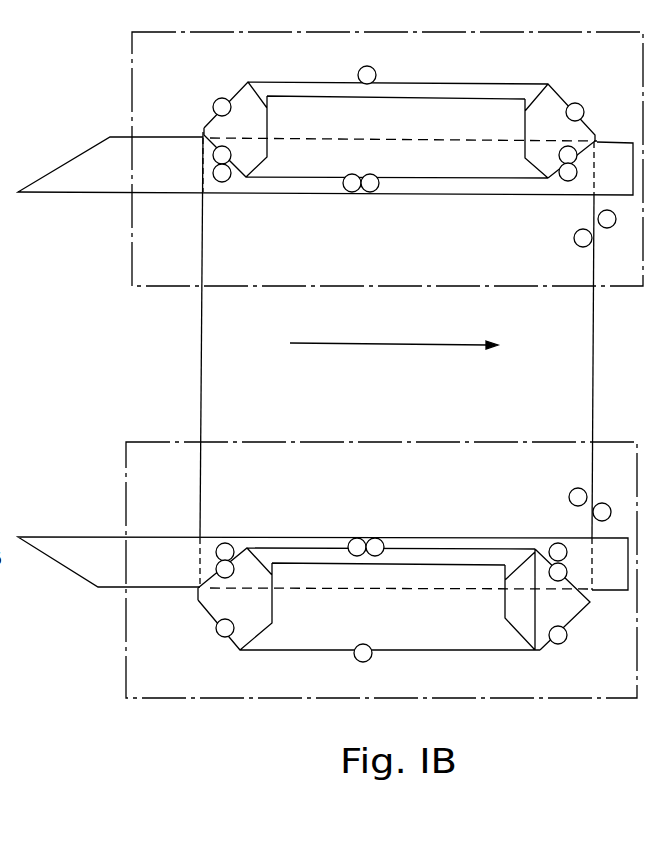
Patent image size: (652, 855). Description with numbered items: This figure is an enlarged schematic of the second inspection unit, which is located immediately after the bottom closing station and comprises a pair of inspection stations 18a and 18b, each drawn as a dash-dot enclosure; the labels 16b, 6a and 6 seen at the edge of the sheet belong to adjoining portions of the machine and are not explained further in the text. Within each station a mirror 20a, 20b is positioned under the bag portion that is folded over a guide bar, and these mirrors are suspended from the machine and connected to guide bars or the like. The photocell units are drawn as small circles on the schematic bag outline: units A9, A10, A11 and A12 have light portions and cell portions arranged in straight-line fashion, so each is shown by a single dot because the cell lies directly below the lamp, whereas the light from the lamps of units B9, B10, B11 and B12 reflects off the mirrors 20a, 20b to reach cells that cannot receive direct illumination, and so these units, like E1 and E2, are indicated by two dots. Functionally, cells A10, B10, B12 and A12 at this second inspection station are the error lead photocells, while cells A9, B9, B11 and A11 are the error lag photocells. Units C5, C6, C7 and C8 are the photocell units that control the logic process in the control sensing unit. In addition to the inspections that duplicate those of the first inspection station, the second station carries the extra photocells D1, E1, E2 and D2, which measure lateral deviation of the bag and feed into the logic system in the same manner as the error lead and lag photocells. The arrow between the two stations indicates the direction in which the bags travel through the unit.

The conveyor section 16b is at (0, 50).
The inspection station 18b is at (132, 83).
The inspection station 18a is at (141, 442).
The mirror 20b is at (84, 186).
The mirror 20a is at (88, 543).
The frame part 6a is at (9, 663).
The frame 6 is at (6, 765).
The photocell D1 is at (384, 66).
The error lag photocell A9 is at (204, 99).
The error lag photocell B9 is at (202, 164).
The error lead photocell A10 is at (596, 104).
The error lead photocell B10 is at (554, 161).
The photocell E1 is at (361, 200).
The photocell unit C5 is at (614, 231).
The photocell unit C6 is at (572, 248).
The photocell E2 is at (366, 532).
The error lag photocell B11 is at (201, 558).
The error lag photocell A11 is at (205, 631).
The photocell D2 is at (375, 667).
The photocell unit C8 is at (565, 494).
The photocell unit C7 is at (612, 521).
The error lead photocell B12 is at (587, 562).
The error lead photocell A12 is at (578, 642).